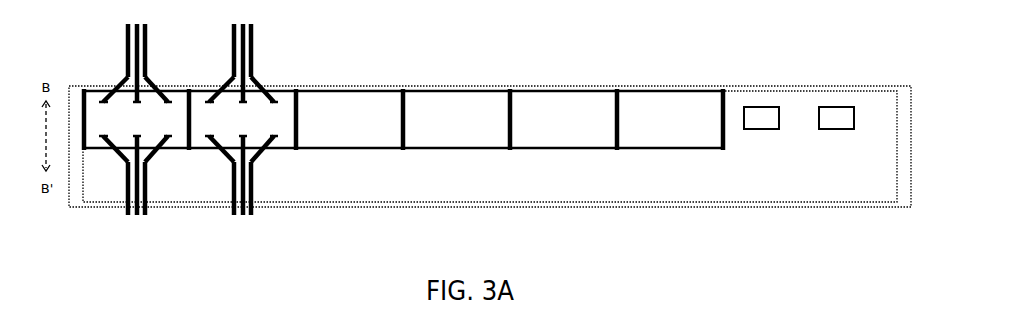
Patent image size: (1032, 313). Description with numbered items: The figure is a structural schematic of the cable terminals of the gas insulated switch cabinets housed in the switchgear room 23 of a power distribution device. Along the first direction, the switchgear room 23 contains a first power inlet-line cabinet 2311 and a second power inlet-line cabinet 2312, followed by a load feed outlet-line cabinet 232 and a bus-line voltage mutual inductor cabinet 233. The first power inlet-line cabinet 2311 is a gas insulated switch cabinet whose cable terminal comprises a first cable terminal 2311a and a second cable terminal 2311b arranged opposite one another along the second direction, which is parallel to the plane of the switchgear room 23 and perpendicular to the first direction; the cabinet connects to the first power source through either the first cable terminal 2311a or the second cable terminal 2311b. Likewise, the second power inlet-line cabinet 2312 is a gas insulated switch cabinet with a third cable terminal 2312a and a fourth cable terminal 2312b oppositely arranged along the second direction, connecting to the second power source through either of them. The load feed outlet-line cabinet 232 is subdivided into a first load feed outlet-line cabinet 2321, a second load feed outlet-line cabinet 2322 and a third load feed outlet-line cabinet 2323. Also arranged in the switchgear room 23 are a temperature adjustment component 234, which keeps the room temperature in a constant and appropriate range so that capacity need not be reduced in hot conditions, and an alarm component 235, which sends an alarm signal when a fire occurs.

The switchgear room 23 is at (831, 84).
The first power inlet-line cabinet 2311 is at (92, 91).
The first cable terminal 2311a is at (166, 100).
The second cable terminal 2311b is at (172, 137).
The second power inlet-line cabinet 2312 is at (282, 101).
The third cable terminal 2312a is at (274, 100).
The fourth cable terminal 2312b is at (273, 137).
The load feed outlet-line cabinet 232 is at (456, 97).
The first load feed outlet-line cabinet 2321 is at (340, 100).
The second load feed outlet-line cabinet 2322 is at (451, 92).
The third load feed outlet-line cabinet 2323 is at (555, 92).
The bus-line voltage mutual inductor cabinet 233 is at (663, 103).
The temperature adjustment component 234 is at (763, 113).
The alarm component 235 is at (850, 110).